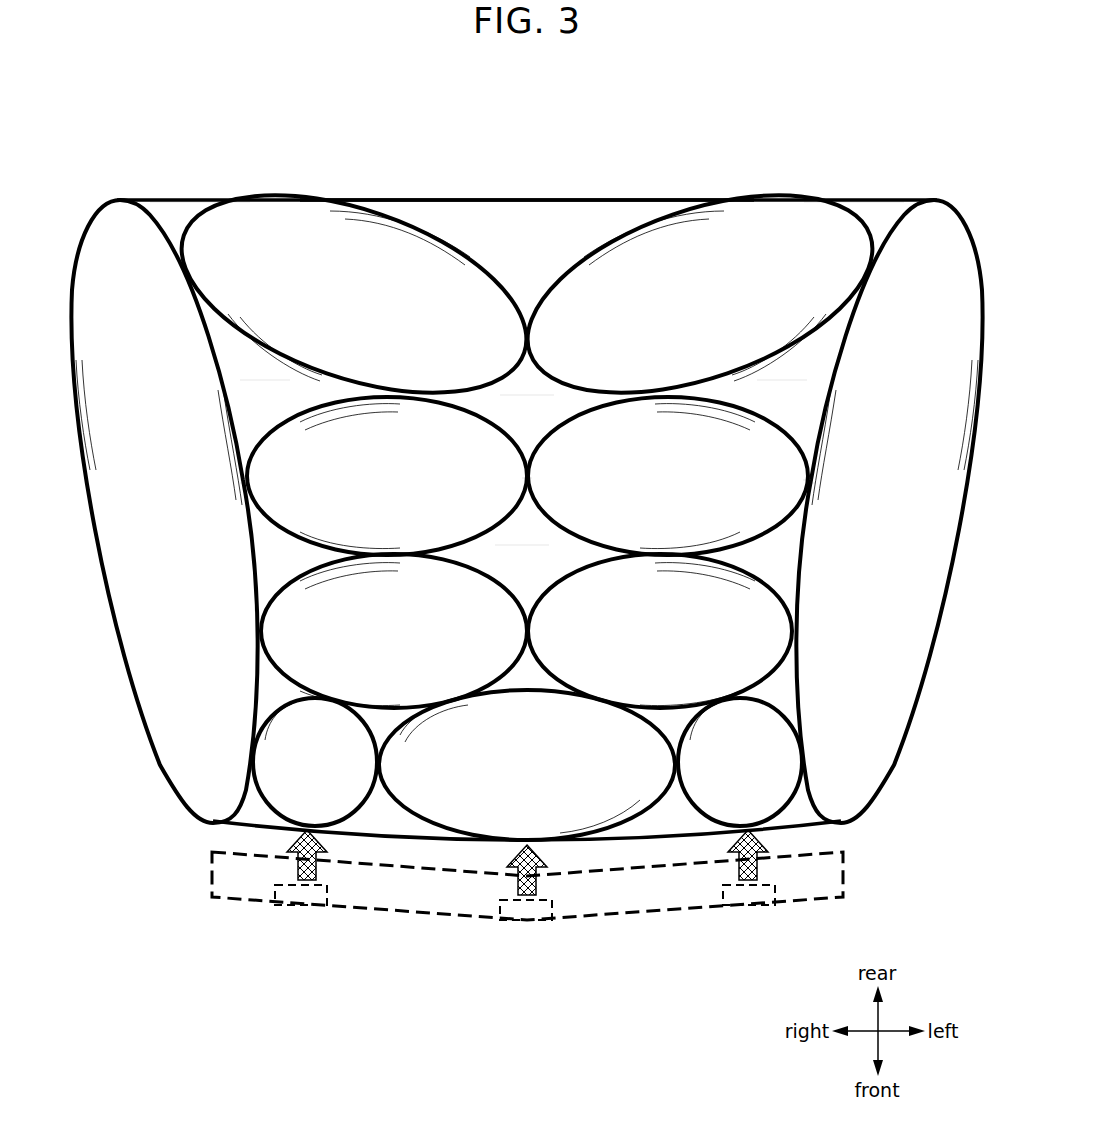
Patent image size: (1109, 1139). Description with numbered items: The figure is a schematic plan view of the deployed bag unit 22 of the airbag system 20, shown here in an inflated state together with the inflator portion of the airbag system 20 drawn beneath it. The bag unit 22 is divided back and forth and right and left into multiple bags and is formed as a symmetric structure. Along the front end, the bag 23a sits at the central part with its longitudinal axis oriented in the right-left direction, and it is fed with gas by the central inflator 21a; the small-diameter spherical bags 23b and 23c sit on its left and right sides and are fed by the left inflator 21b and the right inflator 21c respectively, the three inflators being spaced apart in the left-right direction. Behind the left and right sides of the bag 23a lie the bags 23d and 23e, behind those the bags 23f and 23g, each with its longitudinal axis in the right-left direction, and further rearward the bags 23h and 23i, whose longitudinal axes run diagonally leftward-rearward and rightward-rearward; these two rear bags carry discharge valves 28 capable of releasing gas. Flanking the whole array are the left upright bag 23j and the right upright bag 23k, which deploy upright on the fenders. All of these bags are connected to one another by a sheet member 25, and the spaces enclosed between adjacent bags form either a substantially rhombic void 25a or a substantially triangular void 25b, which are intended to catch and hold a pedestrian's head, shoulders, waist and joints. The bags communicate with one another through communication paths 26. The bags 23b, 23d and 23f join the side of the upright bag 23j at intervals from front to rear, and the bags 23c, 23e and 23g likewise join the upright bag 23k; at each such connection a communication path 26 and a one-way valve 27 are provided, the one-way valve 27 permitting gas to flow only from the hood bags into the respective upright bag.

The airbag system 20 is at (845, 870).
The central inflator 21a is at (514, 921).
The left inflator 21b is at (748, 906).
The right inflator 21c is at (298, 906).
The bag unit 22 is at (107, 690).
The bag 23a is at (527, 765).
The bag 23b is at (740, 762).
The bag 23c is at (315, 762).
The bag 23d is at (660, 631).
The bag 23e is at (394, 631).
The bag 23f is at (668, 476).
The bag 23g is at (387, 476).
The bag 23h is at (699, 294).
The bag 23i is at (353, 294).
The left upright bag 23j is at (889, 511).
The right upright bag 23k is at (164, 511).
The sheet member 25 is at (520, 242).
The void 25a is at (524, 480).
The void 25b is at (834, 689).
The communication path 26 is at (410, 395).
The one-way valve 27 is at (244, 483).
The discharge valve 28 is at (199, 222).